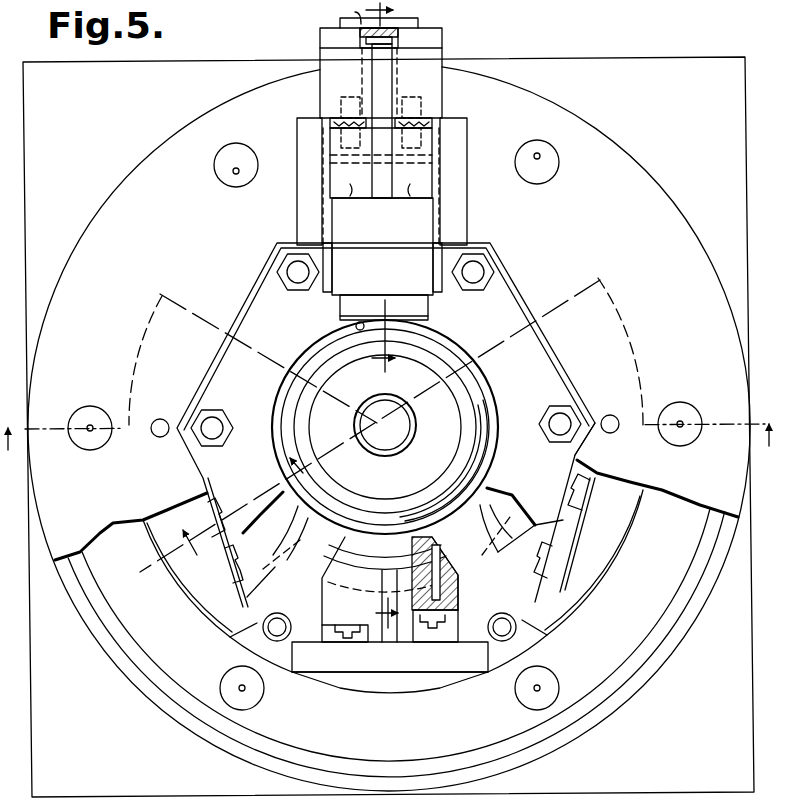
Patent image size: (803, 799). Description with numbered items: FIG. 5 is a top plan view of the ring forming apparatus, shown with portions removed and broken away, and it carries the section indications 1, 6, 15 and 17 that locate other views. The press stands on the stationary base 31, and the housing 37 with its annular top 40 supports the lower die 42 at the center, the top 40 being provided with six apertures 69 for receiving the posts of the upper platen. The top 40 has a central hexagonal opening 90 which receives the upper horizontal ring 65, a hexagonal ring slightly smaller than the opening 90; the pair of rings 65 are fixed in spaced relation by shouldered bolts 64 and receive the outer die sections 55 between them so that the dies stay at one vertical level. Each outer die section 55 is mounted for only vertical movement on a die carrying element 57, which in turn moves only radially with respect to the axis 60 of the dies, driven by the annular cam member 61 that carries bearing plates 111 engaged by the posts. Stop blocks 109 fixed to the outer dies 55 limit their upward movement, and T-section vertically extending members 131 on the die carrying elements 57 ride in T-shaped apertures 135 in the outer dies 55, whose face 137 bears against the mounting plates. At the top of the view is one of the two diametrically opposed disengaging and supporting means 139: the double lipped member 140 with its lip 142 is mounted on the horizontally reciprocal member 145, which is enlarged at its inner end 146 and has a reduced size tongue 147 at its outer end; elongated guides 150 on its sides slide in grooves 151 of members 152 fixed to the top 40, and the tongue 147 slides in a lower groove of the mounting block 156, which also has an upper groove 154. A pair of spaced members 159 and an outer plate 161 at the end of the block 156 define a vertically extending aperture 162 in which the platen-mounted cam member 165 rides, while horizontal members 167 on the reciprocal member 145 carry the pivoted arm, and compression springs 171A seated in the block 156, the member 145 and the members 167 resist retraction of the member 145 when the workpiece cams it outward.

The section line 1- 1 is at (387, 424).
The section line 6- 6 is at (366, 431).
The section line 15- 15 is at (401, 613).
The section line 17- 17 is at (394, 187).
The stationary base 31 is at (726, 192).
The housing 37 is at (661, 158).
The annular top 40 is at (598, 144).
The lower die 42 is at (385, 427).
The outer die sections 55 is at (320, 612).
The die carrying elements 57 is at (393, 591).
The axis 60 is at (550, 156).
The annular cam member 61 is at (396, 642).
The shouldered bolts 64 is at (284, 298).
The horizontal ring elements 65 is at (386, 425).
The apertures 69 is at (217, 170).
The central hexagonal opening 90 is at (564, 362).
The stop blocks 109 is at (230, 508).
The bearing plates 111 is at (270, 712).
The vertically extending members 131 is at (341, 625).
The vertically extending aperture 135 is at (358, 625).
The face 137 is at (356, 642).
The disengaging and supporting means 139 is at (292, 213).
The double lipped member 140 is at (428, 309).
The lip 142 is at (360, 322).
The horizontally reciprocal member 145 is at (440, 222).
The enlarged inner end 146 is at (382, 246).
The tongue 147 is at (354, 97).
The elongated guides 150 is at (436, 266).
The grooves 151 is at (326, 178).
The members 152 is at (297, 146).
The upper groove 154 is at (386, 82).
The mounting block 156 is at (442, 84).
The members 159 is at (320, 35).
The outer plate 161 is at (340, 23).
The vertically extending aperture 162 is at (360, 14).
The cam member 165 is at (398, 40).
The horizontal members 167 is at (350, 202).
The compression springs 171A is at (334, 118).